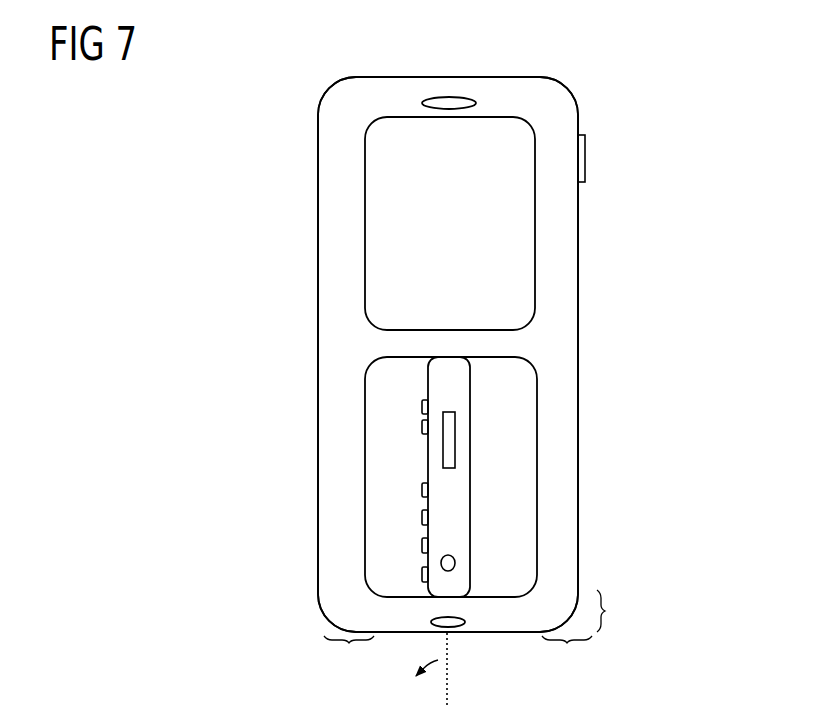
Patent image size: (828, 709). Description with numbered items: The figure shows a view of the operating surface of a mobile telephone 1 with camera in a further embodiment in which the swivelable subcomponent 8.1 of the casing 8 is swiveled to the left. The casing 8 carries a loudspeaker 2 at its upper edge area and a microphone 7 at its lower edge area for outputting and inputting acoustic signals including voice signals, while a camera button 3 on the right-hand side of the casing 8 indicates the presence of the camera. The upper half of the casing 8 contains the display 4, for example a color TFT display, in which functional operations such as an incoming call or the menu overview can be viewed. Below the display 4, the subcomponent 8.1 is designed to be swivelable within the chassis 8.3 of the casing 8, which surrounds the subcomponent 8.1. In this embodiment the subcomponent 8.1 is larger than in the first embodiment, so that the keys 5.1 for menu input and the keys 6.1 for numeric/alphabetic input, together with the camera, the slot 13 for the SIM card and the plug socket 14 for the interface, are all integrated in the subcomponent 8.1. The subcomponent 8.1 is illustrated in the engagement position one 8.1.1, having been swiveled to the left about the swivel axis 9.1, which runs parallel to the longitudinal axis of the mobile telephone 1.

The mobile telephone 1 is at (588, 72).
The loudspeaker 2 is at (449, 100).
The camera button 3 is at (585, 157).
The display of the mobile telephone 4 is at (460, 240).
The key of the menu input keypad 5.1 is at (421, 407).
The key of the numeric/alphabetic input pad 6.1 is at (421, 490).
The microphone 7 is at (452, 624).
The casing of the mobile telephone 8 is at (577, 222).
The swivelable subcomponent of the casing 8.1 is at (482, 396).
The engagement position one of the subcomponent 8.1.1 is at (459, 351).
The chassis of the casing 8.3 is at (484, 634).
The swivel axis running parallel to the longitudinal axis of the mobile telephone 9.1 is at (447, 692).
The slot for SIM card 13 is at (455, 441).
The plug socket for interface 14 is at (455, 563).